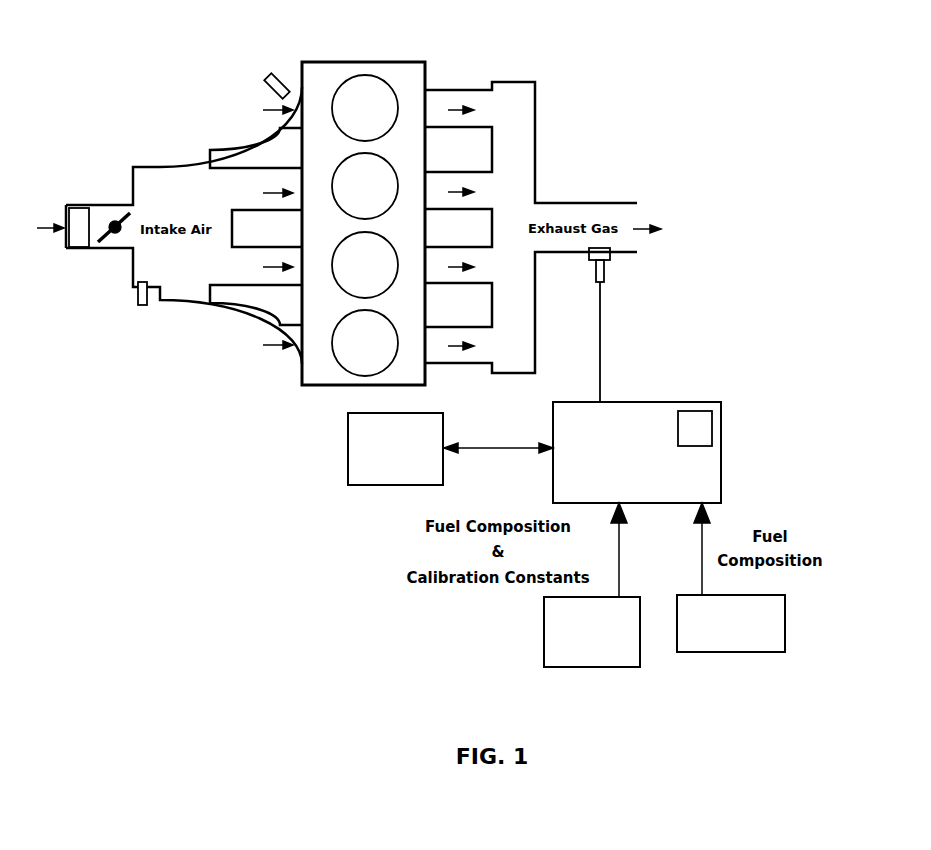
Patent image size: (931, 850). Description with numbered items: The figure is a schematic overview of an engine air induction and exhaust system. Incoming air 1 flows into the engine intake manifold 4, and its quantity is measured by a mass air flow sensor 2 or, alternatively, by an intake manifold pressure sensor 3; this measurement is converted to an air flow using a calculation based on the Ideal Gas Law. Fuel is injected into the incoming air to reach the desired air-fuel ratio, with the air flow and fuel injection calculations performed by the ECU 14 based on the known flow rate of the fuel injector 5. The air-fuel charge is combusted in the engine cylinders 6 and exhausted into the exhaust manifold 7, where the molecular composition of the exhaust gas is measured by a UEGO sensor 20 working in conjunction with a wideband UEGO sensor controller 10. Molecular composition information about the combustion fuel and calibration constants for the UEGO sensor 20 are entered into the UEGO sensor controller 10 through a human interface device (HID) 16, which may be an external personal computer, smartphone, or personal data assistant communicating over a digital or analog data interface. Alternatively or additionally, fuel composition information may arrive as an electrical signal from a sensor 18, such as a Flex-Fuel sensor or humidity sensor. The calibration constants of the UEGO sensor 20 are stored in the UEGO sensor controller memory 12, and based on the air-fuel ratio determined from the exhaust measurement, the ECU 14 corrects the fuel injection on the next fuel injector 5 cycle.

The incoming air 1 is at (51, 232).
The mass air flow sensor 2 is at (82, 232).
The intake manifold pressure sensor 3 is at (142, 310).
The engine intake manifold 4 is at (155, 192).
The fuel injector 5 is at (252, 81).
The engine cylinders 6 is at (378, 178).
The exhaust manifold 7 is at (515, 177).
The UEGO sensor controller 10 is at (660, 427).
The UEGO sensor controller memory 12 is at (694, 412).
The ECU 14 is at (348, 442).
The human interface device (HID) 16 is at (544, 625).
The sensor 18 is at (785, 635).
The UEGO sensor 20 is at (592, 267).